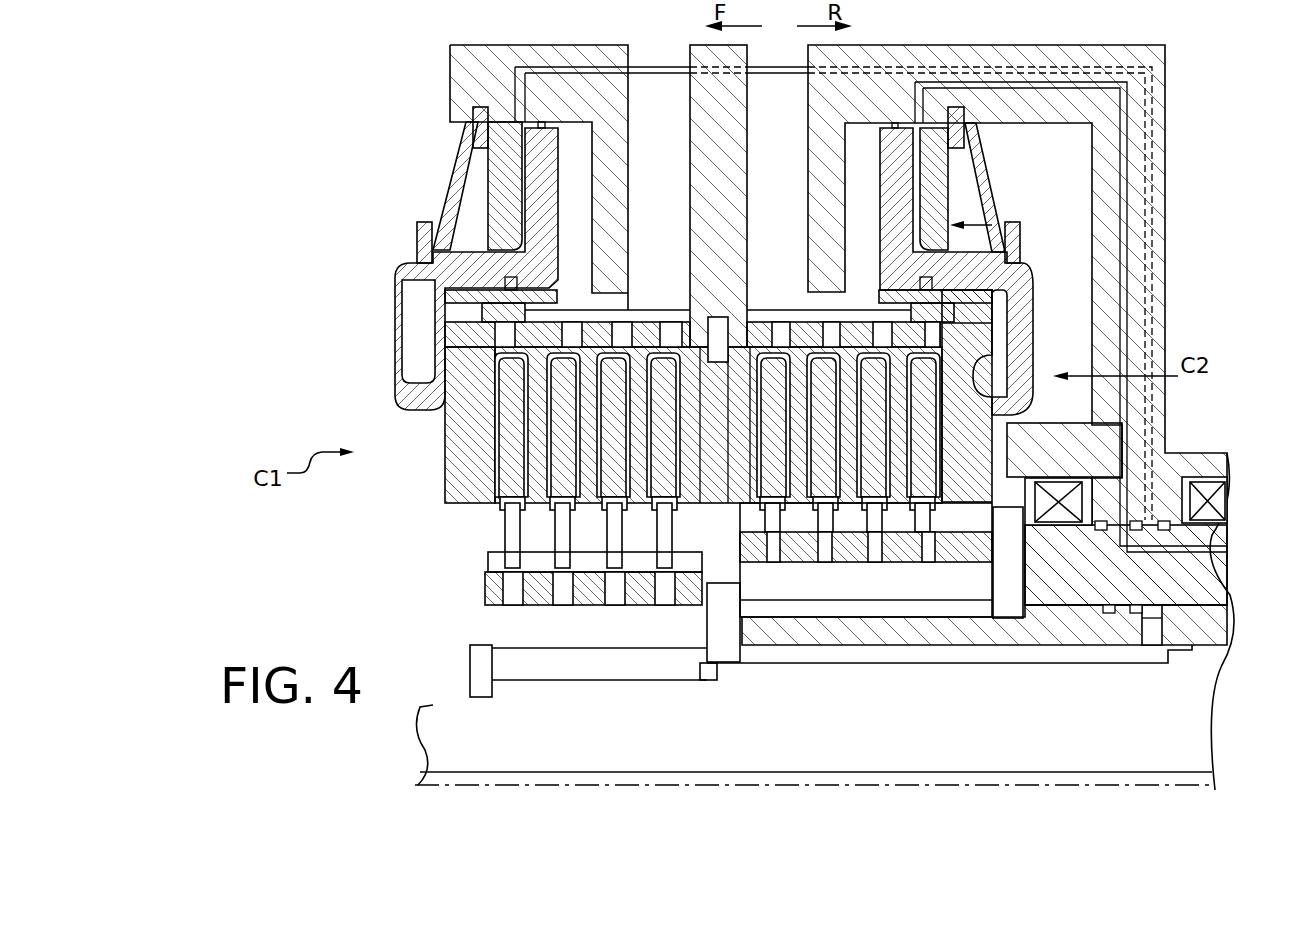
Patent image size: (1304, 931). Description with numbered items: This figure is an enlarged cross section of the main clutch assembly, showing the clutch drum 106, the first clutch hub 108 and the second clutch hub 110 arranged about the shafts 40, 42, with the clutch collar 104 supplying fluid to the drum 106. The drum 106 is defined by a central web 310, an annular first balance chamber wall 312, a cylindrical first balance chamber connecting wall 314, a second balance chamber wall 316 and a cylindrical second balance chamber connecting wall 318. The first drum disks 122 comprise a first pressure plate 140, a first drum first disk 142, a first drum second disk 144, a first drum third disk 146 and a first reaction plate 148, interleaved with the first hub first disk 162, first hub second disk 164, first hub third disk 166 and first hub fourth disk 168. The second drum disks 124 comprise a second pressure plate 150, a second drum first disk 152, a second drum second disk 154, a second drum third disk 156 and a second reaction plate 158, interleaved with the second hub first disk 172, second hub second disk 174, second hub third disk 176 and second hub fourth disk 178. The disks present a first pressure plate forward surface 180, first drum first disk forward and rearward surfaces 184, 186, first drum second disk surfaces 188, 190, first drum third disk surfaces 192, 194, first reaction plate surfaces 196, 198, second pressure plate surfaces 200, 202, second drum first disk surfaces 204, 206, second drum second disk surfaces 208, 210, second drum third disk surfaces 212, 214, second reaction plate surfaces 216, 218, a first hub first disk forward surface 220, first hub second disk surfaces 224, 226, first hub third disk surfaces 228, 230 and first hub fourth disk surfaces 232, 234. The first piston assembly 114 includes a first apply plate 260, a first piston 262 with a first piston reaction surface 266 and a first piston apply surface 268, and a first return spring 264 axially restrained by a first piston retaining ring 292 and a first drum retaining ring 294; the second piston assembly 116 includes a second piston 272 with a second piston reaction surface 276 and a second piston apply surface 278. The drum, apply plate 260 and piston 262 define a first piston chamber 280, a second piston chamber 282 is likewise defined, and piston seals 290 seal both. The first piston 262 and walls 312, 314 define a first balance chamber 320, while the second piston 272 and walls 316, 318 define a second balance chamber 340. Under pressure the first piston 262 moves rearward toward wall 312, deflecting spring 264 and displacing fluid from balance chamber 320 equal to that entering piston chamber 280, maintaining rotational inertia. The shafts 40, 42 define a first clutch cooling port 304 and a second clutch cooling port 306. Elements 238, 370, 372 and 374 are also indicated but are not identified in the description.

The shaft 40 is at (1157, 707).
The shaft 42 is at (1132, 628).
The clutch collar 104 is at (1187, 587).
The clutch drum 106 is at (1140, 52).
The first clutch hub 108 is at (497, 593).
The second clutch hub 110 is at (740, 600).
The first piston assembly 114 is at (568, 142).
The second piston assembly 116 is at (1010, 222).
The first drum disks 122 is at (490, 398).
The second drum disks 124 is at (830, 360).
The first pressure plate 140 is at (457, 497).
The first drum first disk 142 is at (442, 333).
The first drum second disk 144 is at (575, 380).
The first drum third disk 146 is at (620, 400).
The first reaction plate 148 is at (667, 593).
The second pressure plate 150 is at (970, 407).
The second drum first disk 152 is at (867, 290).
The second drum second disk 154 is at (838, 380).
The second drum third disk 156 is at (790, 340).
The second reaction plate 158 is at (753, 547).
The first hub first disk 162 is at (508, 558).
The first hub second disk 164 is at (552, 577).
The first hub third disk 166 is at (562, 600).
The first hub fourth disk 168 is at (606, 605).
The second hub first disk 172 is at (945, 600).
The second hub second disk 174 is at (883, 600).
The second hub third disk 176 is at (808, 600).
The second hub fourth disk 178 is at (752, 580).
The first pressure plate forward surface 180 is at (432, 473).
The first drum first disk forward surface 184 is at (442, 360).
The first drum first disk rearward surface 186 is at (540, 360).
The first drum second disk forward surface 188 is at (537, 477).
The first drum second disk rearward surface 190 is at (443, 462).
The first drum third disk forward surface 192 is at (600, 400).
The first drum third disk rearward surface 194 is at (565, 600).
The first reaction plate forward surface 196 is at (625, 600).
The first reaction plate rearward surface 198 is at (719, 317).
The second pressure plate forward surface 200 is at (1002, 418).
The second pressure plate rearward surface 202 is at (881, 560).
The second drum first disk forward surface 204 is at (980, 320).
The second drum first disk rearward surface 206 is at (953, 340).
The second drum second disk forward surface 208 is at (833, 600).
The second drum second disk rearward surface 210 is at (910, 600).
The second drum third disk forward surface 212 is at (778, 600).
The second drum third disk rearward surface 214 is at (778, 600).
The second reaction plate forward surface 216 is at (690, 580).
The second reaction plate rearward surface 218 is at (748, 330).
The first hub first disk forward surface 220 is at (455, 490).
The first hub second disk forward surface 224 is at (510, 513).
The first hub second disk rearward surface 226 is at (530, 425).
The first hub third disk forward surface 228 is at (507, 533).
The first hub third disk rearward surface 230 is at (650, 322).
The first hub fourth disk forward surface 232 is at (770, 400).
The first hub fourth disk rearward surface 234 is at (772, 420).
The tooth 238 is at (598, 400).
The first apply plate 260 is at (498, 193).
The first piston 262 is at (415, 278).
The first return spring 264 is at (460, 167).
The first piston reaction surface 266 is at (440, 380).
The first piston apply surface 268 is at (470, 125).
The second piston 272 is at (890, 192).
The second piston reaction surface 276 is at (967, 378).
The second piston apply surface 278 is at (926, 213).
The first piston chamber 280 is at (522, 128).
The second piston chamber 282 is at (972, 123).
The piston seals 290 is at (893, 123).
The first piston retaining ring 292 is at (425, 225).
The first drum retaining ring 294 is at (476, 122).
The first clutch cooling port 304 is at (1123, 657).
The second clutch cooling port 306 is at (1057, 613).
The central web 310 is at (725, 107).
The first balance chamber wall 312 is at (613, 152).
The first balance chamber connecting wall 314 is at (602, 52).
The second balance chamber wall 316 is at (830, 143).
The second balance chamber connecting wall 318 is at (860, 95).
The first balance chamber 320 is at (577, 182).
The second balance chamber 340 is at (860, 170).
The bolt 370 is at (470, 665).
The bolt end 372 is at (715, 682).
The bore 374 is at (1005, 570).